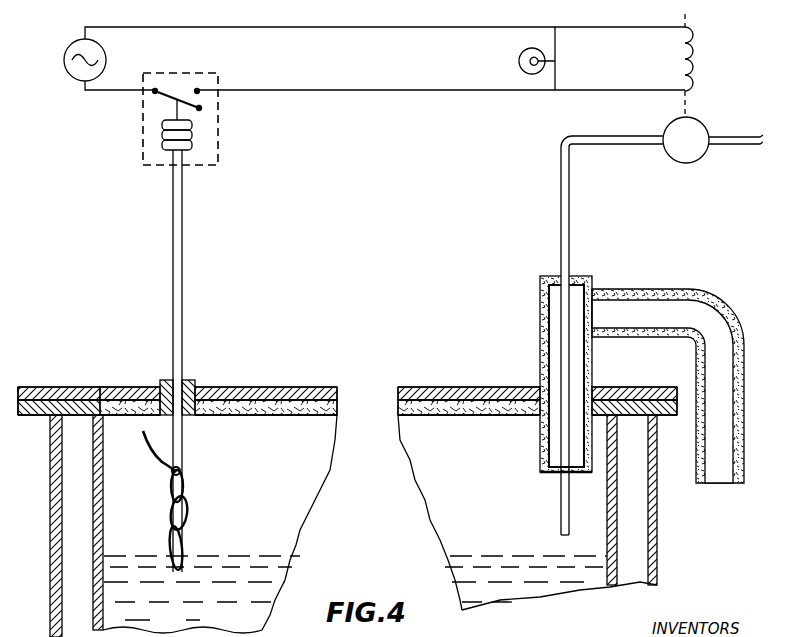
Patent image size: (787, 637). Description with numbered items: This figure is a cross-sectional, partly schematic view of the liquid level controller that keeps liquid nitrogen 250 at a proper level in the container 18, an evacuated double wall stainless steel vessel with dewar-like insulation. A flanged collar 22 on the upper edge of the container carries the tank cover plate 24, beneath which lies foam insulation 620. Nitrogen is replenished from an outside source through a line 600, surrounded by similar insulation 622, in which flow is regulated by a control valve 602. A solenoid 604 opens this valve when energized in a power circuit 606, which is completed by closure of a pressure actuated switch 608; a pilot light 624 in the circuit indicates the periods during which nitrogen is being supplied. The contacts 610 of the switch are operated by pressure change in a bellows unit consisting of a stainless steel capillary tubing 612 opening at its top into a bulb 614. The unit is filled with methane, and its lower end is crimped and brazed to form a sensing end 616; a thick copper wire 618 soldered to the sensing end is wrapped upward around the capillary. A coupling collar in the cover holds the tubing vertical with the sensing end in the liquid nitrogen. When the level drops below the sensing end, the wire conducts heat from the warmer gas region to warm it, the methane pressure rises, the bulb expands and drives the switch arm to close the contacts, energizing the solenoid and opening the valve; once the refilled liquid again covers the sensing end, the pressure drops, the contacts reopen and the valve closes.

The power circuit 606 is at (384, 72).
The pilot light 624 is at (519, 61).
The solenoid 604 is at (694, 60).
The control valve 602 is at (690, 163).
The pressure actuated switch 608 is at (140, 128).
The contacts 610 is at (190, 101).
The bulb 614 is at (192, 137).
The capillary tubing 612 is at (173, 221).
The tank cover plate 24 is at (50, 388).
The foam insulation 620 is at (258, 373).
The flanged collar 22 is at (33, 416).
The container 18 is at (50, 510).
The copper wire 618 is at (153, 449).
The sensing end 616 is at (171, 565).
The liquid nitrogen 250 is at (254, 572).
The insulation 622 is at (717, 300).
The line 600 is at (571, 221).